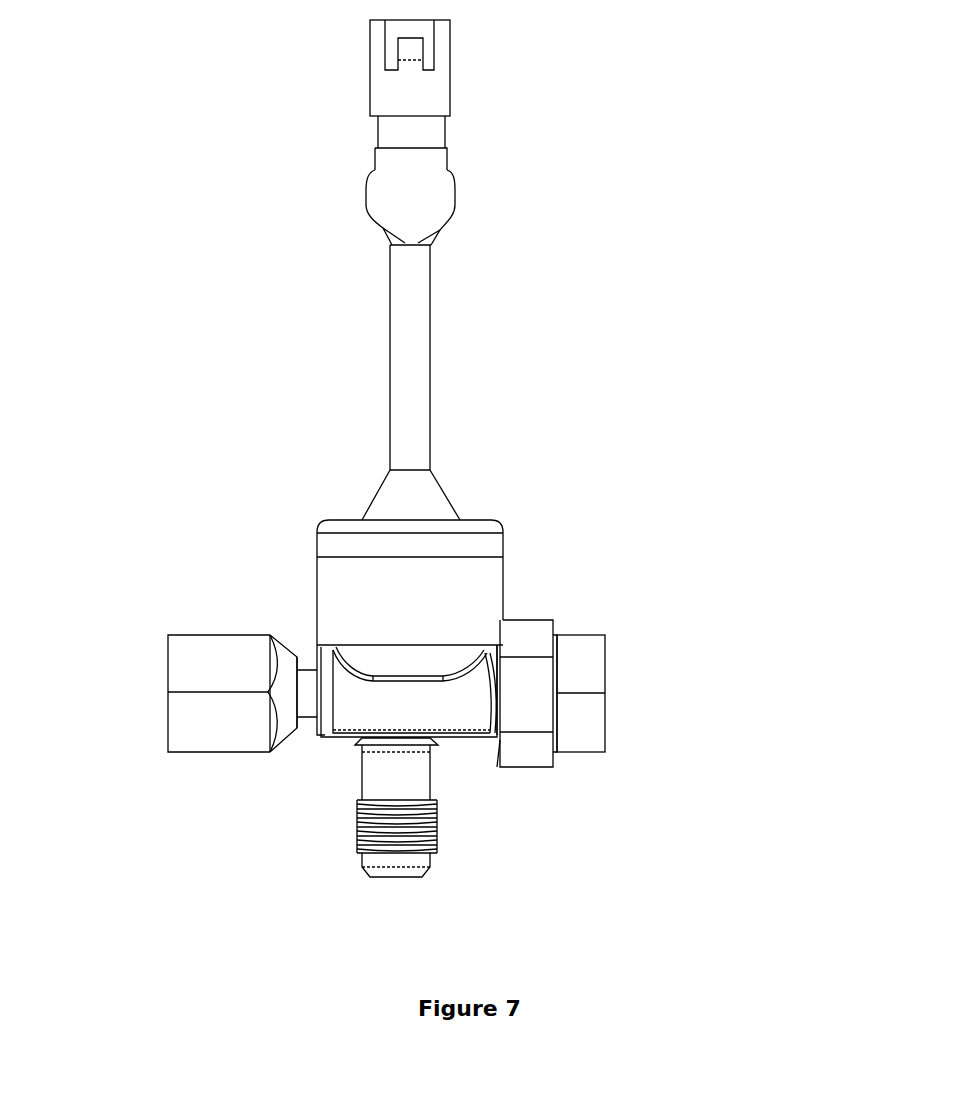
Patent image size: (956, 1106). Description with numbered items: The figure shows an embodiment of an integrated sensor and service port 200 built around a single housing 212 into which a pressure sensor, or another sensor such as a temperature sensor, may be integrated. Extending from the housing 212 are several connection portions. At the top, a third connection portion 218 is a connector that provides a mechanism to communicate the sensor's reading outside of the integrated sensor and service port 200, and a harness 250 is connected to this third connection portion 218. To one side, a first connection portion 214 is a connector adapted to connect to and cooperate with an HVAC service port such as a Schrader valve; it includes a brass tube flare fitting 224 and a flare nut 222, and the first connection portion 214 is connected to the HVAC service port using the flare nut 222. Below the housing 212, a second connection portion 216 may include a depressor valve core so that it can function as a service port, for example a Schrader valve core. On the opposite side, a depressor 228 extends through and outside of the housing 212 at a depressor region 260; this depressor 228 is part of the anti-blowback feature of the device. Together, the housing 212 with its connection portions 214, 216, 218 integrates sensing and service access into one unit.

The integrated sensor and service port 200 is at (96, 286).
The harness 250 is at (432, 348).
The third connection portion 218 is at (490, 522).
The housing 212 is at (530, 603).
The brass tube flare fitting 224 is at (300, 646).
The first connection portion 214 is at (150, 721).
The flare nut 222 is at (210, 615).
The depressor region 260 is at (533, 763).
The depressor 228 is at (625, 691).
The second connection portion 216 is at (462, 845).